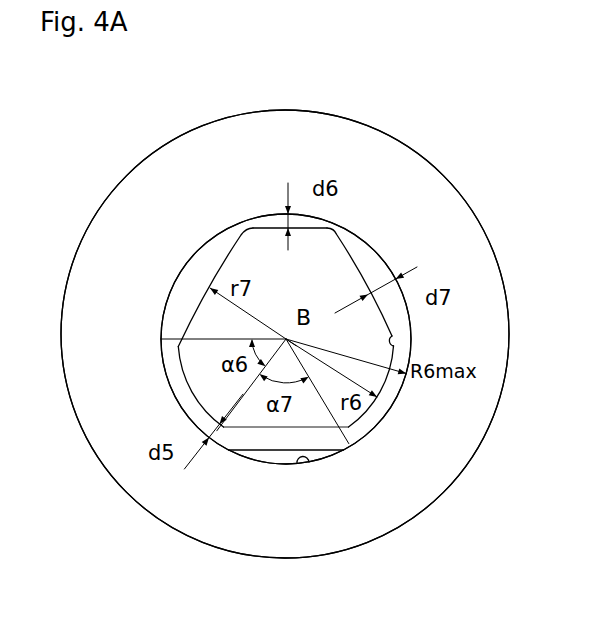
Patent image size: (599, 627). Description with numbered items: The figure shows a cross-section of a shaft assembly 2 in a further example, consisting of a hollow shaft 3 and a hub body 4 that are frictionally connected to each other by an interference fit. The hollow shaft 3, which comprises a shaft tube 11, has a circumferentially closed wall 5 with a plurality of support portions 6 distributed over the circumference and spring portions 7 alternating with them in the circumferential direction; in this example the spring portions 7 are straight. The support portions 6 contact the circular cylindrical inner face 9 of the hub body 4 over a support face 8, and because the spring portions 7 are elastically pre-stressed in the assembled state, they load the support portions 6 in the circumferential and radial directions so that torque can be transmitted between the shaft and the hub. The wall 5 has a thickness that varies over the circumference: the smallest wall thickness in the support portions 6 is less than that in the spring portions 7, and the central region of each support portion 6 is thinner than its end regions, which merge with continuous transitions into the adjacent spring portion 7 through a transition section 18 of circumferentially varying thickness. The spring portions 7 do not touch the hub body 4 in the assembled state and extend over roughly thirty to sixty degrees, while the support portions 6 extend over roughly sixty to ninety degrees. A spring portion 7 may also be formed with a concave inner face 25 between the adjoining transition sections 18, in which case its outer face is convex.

The shaft assembly 2 is at (110, 130).
The hollow shaft 3 is at (352, 224).
The hub body 4 is at (353, 118).
The wall 5 is at (232, 440).
The support portions 6 is at (270, 220).
The spring portions 7 is at (370, 263).
The support face 8 is at (400, 387).
The inner face 9 is at (306, 461).
The shaft tube 11 is at (352, 224).
The transition section 18 is at (236, 238).
The concave inner face 25 is at (389, 340).